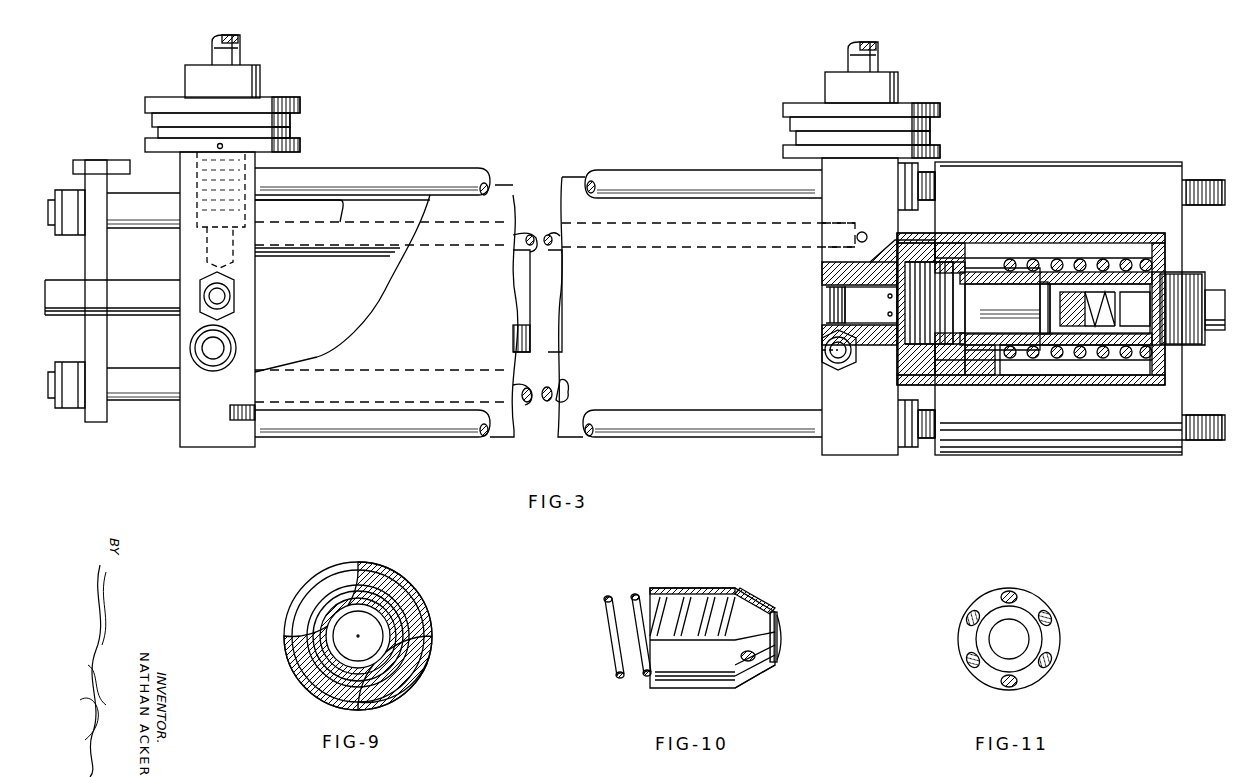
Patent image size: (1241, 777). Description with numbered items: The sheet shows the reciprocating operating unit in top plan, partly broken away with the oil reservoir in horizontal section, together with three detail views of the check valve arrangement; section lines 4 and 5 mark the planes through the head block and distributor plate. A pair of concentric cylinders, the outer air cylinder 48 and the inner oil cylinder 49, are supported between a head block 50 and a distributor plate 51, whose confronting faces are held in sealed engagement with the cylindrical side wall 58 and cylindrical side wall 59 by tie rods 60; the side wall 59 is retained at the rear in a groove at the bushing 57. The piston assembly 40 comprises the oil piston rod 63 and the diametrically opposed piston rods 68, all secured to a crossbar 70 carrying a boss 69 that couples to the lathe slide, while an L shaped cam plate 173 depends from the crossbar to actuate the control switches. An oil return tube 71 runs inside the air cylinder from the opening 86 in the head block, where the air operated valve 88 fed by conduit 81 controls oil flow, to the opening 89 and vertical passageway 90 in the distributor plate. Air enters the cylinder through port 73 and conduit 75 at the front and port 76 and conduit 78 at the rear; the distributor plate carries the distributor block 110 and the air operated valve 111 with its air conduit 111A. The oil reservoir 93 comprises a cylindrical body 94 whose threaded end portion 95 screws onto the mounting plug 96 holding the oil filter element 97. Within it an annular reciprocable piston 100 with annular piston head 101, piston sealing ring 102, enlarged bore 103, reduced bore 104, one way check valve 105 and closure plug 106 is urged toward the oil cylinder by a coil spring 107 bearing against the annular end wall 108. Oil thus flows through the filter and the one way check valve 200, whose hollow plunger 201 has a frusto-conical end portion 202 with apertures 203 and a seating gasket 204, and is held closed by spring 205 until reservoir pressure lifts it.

In FIG. 3, the section line 4- 4 is at (352, 466).
In FIG. 3, the section line 5- 5 is at (718, 470).
In FIG. 3, the piston assembly 40 is at (108, 425).
In FIG. 3, the air cylinder 48 is at (386, 311).
In FIG. 3, the oil cylinder 49 is at (342, 283).
In FIG. 3, the head block 50 is at (208, 450).
In FIG. 3, the distributor plate 51 is at (878, 306).
In FIG. 3, the bushing 57 is at (822, 272).
In FIG. 3, the cylindrical side wall of air cylinder 58 is at (520, 324).
In FIG. 3, the cylindrical side wall of oil cylinder 59 is at (520, 272).
In FIG. 3, the tie rods 60 is at (345, 175).
In FIG. 3, the piston rod 63 is at (128, 282).
In FIG. 3, the piston rods 68 is at (125, 205).
In FIG. 3, the boss 69 is at (78, 275).
In FIG. 3, the crossbar 70 is at (90, 332).
In FIG. 3, the oil return tube 71 is at (360, 224).
In FIG. 3, the port 73 is at (250, 310).
In FIG. 3, the conduit 75 is at (223, 280).
In FIG. 3, the port 76 is at (820, 347).
In FIG. 3, the conduit 78 is at (848, 365).
In FIG. 3, the conduit 81 is at (212, 48).
In FIG. 3, the opening 86 is at (247, 222).
In FIG. 3, the valve 88 is at (262, 102).
In FIG. 3, the opening 89 is at (828, 228).
In FIG. 3, the vertical passageway 90 is at (866, 232).
In FIG. 3, the oil reservoir 93 is at (1115, 236).
In FIG. 3, the cylindrical body 94 is at (1028, 240).
In FIG. 3, the threaded end portion 95 is at (922, 240).
In FIG. 3, the mounting plug 96 is at (940, 250).
In FIG. 3, the oil filter element 97 is at (1007, 309).
In FIG. 3, the annular reciprocable piston 100 is at (1062, 262).
In FIG. 3, the annular piston head 101 is at (1020, 378).
In FIG. 3, the piston sealing ring 102 is at (990, 380).
In FIG. 3, the enlarged bore 103 is at (1062, 344).
In FIG. 3, the reduced bore 104 is at (1092, 345).
In FIG. 3, the one way check valve 105 is at (1100, 309).
In FIG. 3, the closure plug 106 is at (1190, 348).
In FIG. 3, the coil spring 107 is at (1144, 264).
In FIG. 3, the annular end wall 108 is at (1170, 262).
In FIG. 3, the distributor block 110 is at (1080, 308).
In FIG. 3, the air operated valve 111 is at (902, 112).
In FIG. 3, the air conduit 111A is at (878, 46).
In FIG. 3, the cam plate 173 is at (96, 165).
In FIG. 3, the one way check valve 200 is at (871, 304).
In FIG. 10, the one way check valve 200 is at (714, 590).
In FIG. 9, the plunger 201 is at (432, 636).
In FIG. 10, the plunger 201 is at (712, 638).
In FIG. 11, the plunger 201 is at (1058, 639).
In FIG. 9, the frusto-conical end portion 202 is at (405, 603).
In FIG. 10, the frusto-conical end portion 202 is at (748, 685).
In FIG. 10, the apertures 203 is at (760, 598).
In FIG. 11, the apertures 203 is at (966, 664).
In FIG. 10, the seating gasket 204 is at (780, 614).
In FIG. 11, the seating gasket 204 is at (988, 640).
In FIG. 3, the spring 205 is at (826, 304).
In FIG. 10, the spring 205 is at (606, 630).